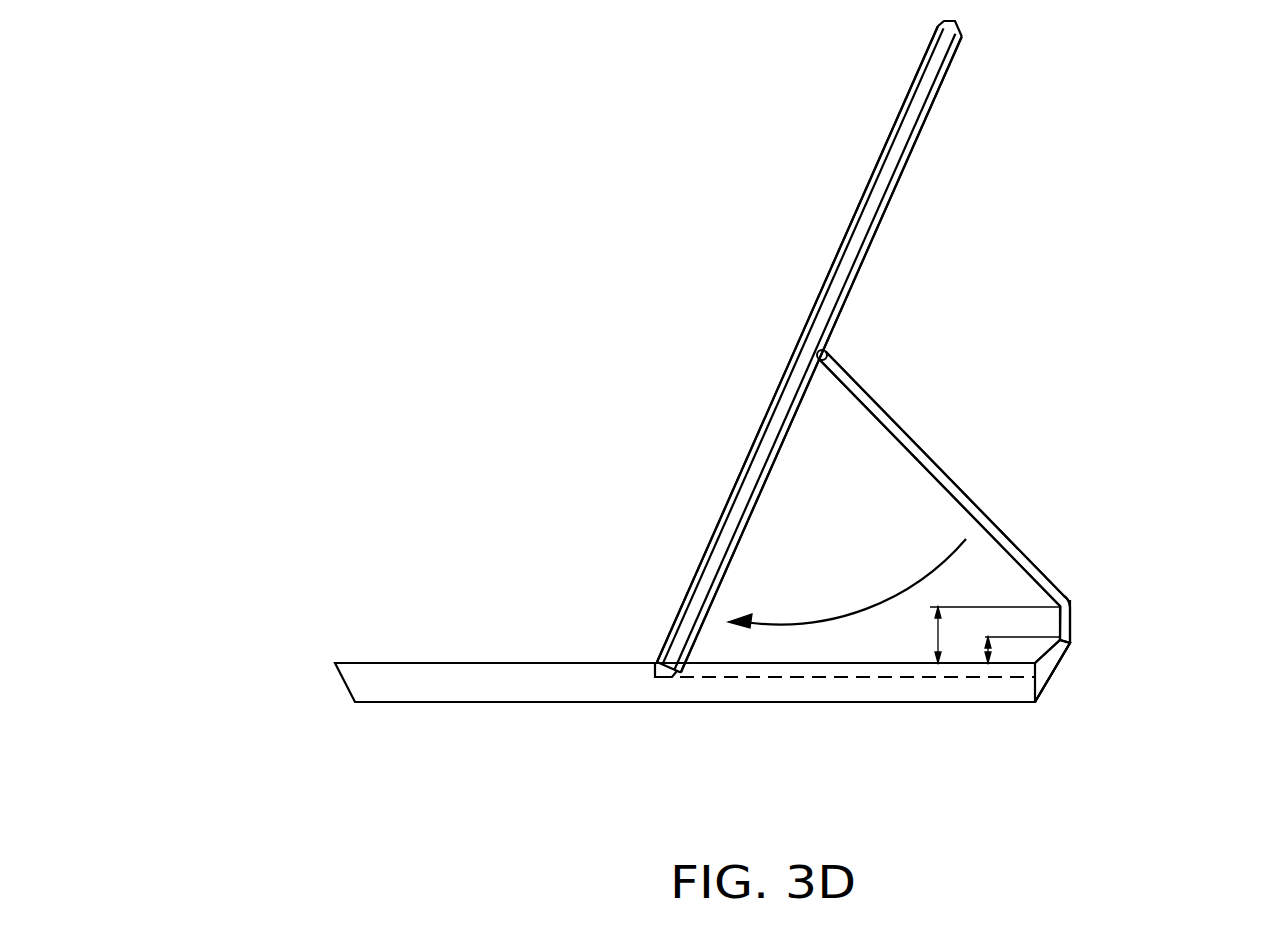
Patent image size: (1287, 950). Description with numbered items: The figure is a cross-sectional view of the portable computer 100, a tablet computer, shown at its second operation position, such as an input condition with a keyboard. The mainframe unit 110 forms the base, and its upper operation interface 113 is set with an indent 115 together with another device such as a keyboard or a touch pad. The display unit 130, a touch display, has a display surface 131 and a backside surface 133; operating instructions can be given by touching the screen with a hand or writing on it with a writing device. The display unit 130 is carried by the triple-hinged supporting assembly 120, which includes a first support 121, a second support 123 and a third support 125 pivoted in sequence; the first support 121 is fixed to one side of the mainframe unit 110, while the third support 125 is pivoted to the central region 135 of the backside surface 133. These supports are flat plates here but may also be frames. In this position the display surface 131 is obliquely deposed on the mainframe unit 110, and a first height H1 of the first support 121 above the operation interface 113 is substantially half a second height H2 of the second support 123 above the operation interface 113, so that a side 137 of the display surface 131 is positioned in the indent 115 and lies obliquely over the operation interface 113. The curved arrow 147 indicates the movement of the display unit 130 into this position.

The portable computer 100 is at (493, 218).
The mainframe unit 110 is at (352, 677).
The operation interface 113 is at (416, 648).
The indent 115 is at (890, 670).
The triple-hinged supporting assembly 120 is at (1210, 500).
The first support 121 is at (1053, 665).
The second support 123 is at (1070, 623).
The third support 125 is at (1005, 540).
The display unit 130 is at (950, 60).
The display surface 131 is at (782, 263).
The backside surface 133 is at (915, 165).
The central region 135 is at (835, 342).
The side of the display surface 137 is at (657, 677).
The rotation direction 147 is at (905, 590).
The first height H1 is at (985, 652).
The second height H2 is at (976, 635).